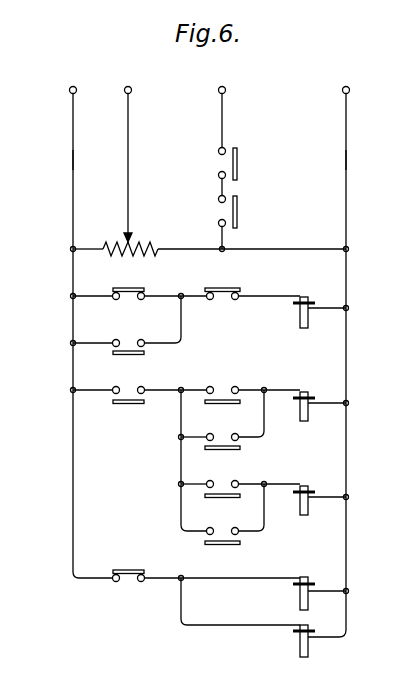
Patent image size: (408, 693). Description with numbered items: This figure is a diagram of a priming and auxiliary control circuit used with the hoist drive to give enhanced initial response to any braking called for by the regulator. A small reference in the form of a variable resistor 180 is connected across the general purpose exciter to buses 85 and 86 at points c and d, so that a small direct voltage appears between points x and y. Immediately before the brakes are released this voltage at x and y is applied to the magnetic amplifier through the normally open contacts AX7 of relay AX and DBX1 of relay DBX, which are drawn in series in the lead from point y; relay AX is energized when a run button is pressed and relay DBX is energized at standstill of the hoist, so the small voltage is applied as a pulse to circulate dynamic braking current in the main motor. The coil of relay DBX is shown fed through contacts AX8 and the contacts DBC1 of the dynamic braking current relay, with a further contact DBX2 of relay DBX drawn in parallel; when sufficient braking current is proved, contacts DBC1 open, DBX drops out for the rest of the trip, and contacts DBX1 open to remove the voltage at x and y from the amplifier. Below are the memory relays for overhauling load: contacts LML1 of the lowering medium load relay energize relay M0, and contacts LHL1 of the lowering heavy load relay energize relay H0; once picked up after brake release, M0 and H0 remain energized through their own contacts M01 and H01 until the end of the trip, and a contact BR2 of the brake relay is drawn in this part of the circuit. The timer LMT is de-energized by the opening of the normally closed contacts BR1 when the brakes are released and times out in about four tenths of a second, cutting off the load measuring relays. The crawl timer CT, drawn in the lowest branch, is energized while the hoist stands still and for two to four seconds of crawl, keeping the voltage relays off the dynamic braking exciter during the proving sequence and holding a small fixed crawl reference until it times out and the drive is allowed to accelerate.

The point c is at (90, 325).
The point x is at (127, 157).
The point y is at (221, 110).
The point d is at (329, 354).
The bus 85 is at (73, 159).
The bus 86 is at (346, 159).
The variable resistor 180 is at (123, 244).
The normally open contacts of relay DBX DBX1 is at (237, 163).
The normally open contacts of relay AX AX7 is at (237, 211).
The contacts of relay AX AX8 is at (142, 288).
The contacts of dynamic braking current relay DBC DBC1 is at (213, 288).
The relay DBX is at (307, 298).
The contacts of relay DBX DBX2 is at (139, 355).
The contacts of brake relay BR BR2 is at (131, 404).
The contacts of lowering medium load relay LML LML1 is at (224, 404).
The medium overhauling load relay M0 is at (307, 393).
The contacts of relay MO M01 is at (218, 451).
The contacts of lowering heavy load relay LHL LHL1 is at (224, 498).
The heavy overhauling load relay H0 is at (307, 487).
The contacts of relay HO H01 is at (218, 545).
The normally closed contacts of brake relay BR BR1 is at (131, 569).
The timer LMT is at (307, 578).
The crawl timer CT is at (297, 639).